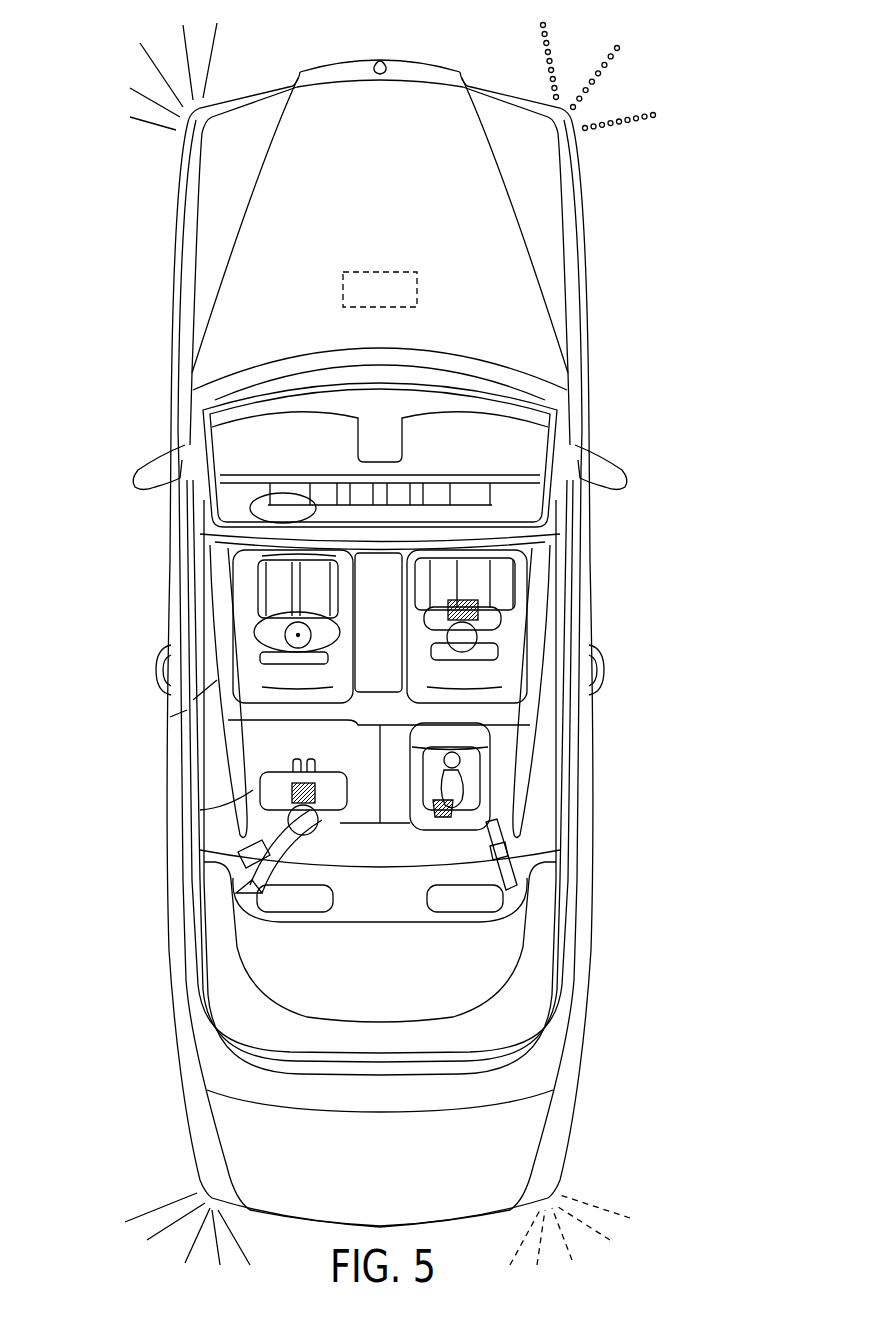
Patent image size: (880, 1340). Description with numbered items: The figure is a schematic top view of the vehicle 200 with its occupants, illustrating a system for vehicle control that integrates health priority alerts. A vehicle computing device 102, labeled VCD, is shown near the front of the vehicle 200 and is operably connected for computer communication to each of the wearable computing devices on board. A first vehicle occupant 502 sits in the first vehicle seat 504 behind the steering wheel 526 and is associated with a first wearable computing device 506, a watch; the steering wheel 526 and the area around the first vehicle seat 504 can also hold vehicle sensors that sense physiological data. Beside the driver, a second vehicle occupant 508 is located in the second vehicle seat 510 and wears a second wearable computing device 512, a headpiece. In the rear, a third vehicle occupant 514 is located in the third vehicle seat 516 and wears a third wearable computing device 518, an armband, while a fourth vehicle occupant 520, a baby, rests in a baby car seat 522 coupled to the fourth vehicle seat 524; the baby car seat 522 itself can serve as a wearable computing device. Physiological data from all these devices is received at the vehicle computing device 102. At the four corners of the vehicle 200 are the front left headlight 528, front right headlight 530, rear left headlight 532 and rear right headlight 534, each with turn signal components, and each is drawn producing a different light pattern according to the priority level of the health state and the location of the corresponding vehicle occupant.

The vehicle computing device 102 is at (418, 292).
The vehicle 200 is at (608, 215).
The first vehicle occupant 502 is at (285, 628).
The first vehicle seat 504 is at (248, 657).
The first wearable computing device 506 is at (283, 568).
The second vehicle occupant 508 is at (498, 604).
The second vehicle seat 510 is at (513, 657).
The second wearable computing device 512 is at (480, 638).
The third vehicle occupant 514 is at (285, 818).
The third vehicle seat 516 is at (248, 750).
The third wearable computing device 518 is at (275, 798).
The fourth vehicle occupant 520 is at (447, 793).
The baby car seat 522 is at (480, 734).
The fourth vehicle seat 524 is at (507, 773).
The steering wheel 526 is at (300, 566).
The front left headlight 528 is at (178, 122).
The front right headlight 530 is at (575, 127).
The rear left headlight 532 is at (207, 1203).
The rear right headlight 534 is at (550, 1202).